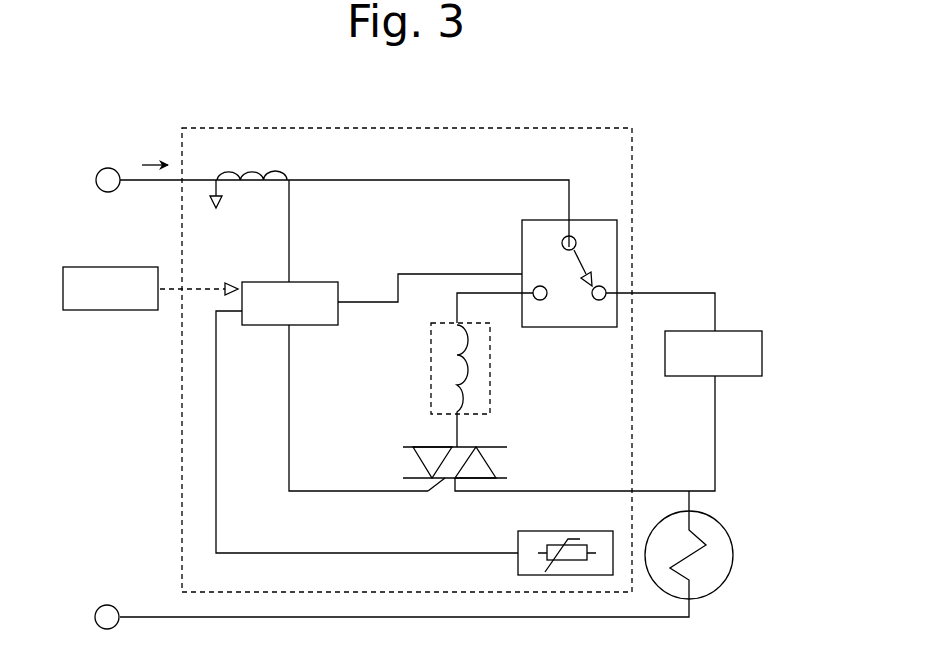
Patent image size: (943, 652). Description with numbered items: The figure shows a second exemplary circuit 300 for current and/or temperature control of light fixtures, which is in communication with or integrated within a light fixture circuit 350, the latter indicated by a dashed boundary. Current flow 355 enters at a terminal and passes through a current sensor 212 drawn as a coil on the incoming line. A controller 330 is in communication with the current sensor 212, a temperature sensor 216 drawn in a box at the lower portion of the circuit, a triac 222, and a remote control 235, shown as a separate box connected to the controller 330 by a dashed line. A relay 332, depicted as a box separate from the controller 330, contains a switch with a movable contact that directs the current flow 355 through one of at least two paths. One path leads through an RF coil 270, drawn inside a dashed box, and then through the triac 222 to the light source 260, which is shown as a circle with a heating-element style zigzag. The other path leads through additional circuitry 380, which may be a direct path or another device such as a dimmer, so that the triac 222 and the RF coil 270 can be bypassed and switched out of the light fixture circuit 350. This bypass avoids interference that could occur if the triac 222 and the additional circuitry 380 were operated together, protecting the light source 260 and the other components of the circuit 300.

The current flow 355 is at (150, 146).
The current sensor 212 is at (241, 160).
The light fixture circuit 350 is at (399, 112).
The second exemplary circuit 300 is at (578, 126).
The relay 332 is at (520, 217).
The remote control 235 is at (116, 302).
The controller 330 is at (296, 316).
The RF coil 270 is at (421, 348).
The triac 222 is at (428, 442).
The temperature sensor 216 is at (531, 527).
The additional circuitry 380 is at (719, 366).
The light source 260 is at (729, 520).